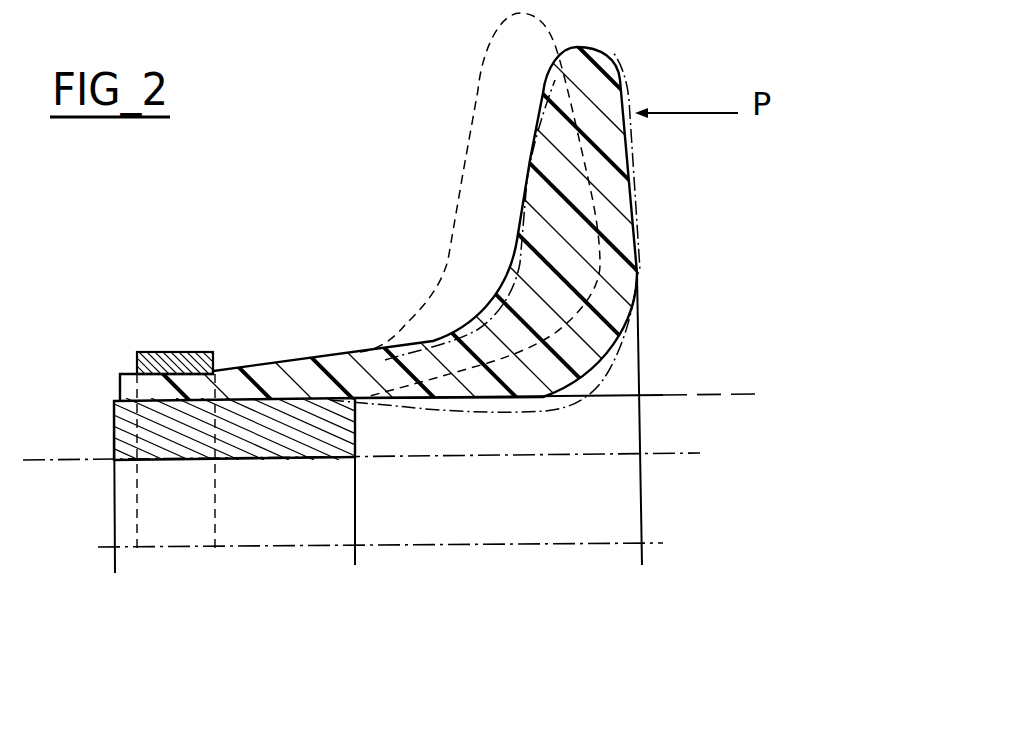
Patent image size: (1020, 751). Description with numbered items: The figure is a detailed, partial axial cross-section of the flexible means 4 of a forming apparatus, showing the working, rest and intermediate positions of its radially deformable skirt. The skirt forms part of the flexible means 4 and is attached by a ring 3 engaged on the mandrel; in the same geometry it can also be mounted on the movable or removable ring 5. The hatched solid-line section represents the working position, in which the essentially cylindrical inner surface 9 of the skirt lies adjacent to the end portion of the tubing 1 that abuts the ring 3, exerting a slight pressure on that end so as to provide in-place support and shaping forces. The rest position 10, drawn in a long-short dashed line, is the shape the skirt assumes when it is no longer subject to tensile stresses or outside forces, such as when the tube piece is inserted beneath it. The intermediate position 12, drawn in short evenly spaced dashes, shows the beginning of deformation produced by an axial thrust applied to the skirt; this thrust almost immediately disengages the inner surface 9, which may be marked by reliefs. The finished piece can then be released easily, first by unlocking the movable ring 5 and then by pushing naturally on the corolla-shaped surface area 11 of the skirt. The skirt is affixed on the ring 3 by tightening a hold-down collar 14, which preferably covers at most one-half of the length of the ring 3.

The tubing 1 is at (413, 440).
The ring 3 is at (177, 433).
The flexible means 4 is at (573, 263).
The movable ring 5 is at (135, 463).
The inner surface 9 is at (503, 418).
The rest position 10 is at (586, 422).
The corolla-shaped surface area 11 is at (563, 170).
The intermediate position 12 is at (466, 122).
The hold-down collar 14 is at (150, 352).